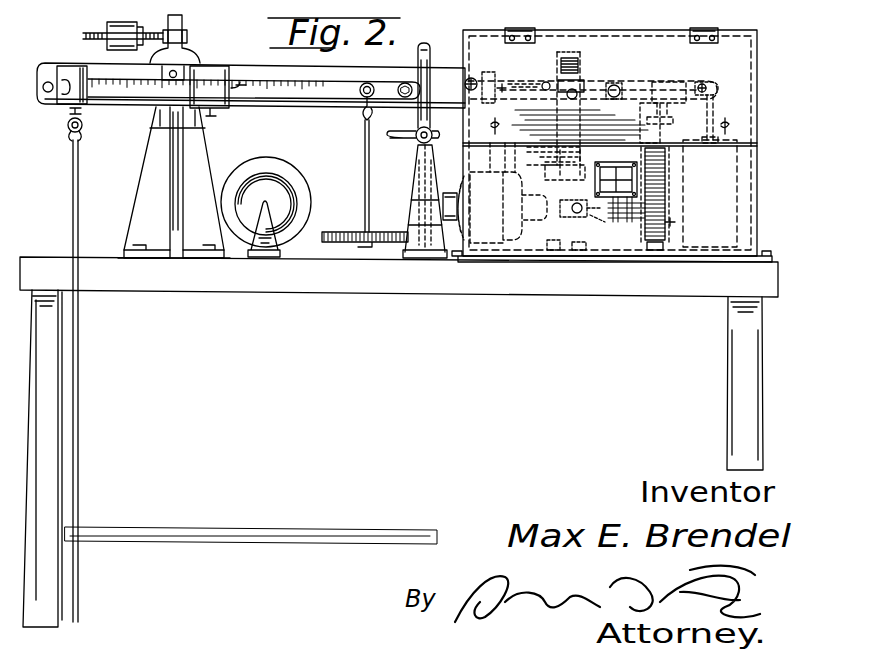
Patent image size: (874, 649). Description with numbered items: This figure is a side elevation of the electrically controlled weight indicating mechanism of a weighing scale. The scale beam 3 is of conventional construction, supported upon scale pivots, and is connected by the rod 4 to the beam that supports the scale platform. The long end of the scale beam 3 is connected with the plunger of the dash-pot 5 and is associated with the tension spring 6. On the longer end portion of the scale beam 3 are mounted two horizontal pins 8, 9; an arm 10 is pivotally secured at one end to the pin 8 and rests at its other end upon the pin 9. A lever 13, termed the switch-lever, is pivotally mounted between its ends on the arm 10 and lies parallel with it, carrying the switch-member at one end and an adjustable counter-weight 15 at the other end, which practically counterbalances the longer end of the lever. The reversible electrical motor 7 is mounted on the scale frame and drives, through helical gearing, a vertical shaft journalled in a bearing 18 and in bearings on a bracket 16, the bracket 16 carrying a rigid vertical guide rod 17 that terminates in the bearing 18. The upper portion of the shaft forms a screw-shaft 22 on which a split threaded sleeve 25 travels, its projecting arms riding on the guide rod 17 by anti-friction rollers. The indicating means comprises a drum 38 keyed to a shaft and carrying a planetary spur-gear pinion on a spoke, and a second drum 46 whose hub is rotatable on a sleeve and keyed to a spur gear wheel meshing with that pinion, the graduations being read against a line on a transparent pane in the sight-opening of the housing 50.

The scale beam 3 is at (300, 110).
The rod 4 is at (78, 443).
The dash-pot 5 is at (738, 198).
The tension spring 6 is at (645, 212).
The electrical motor 7 is at (463, 175).
The horizontal pin 8 is at (471, 78).
The horizontal pin 9 is at (612, 101).
The arm 10 is at (661, 82).
The lever 13 is at (613, 84).
The adjustable counter-weight 15 is at (697, 84).
The bracket 16 is at (545, 245).
The vertical guide rod 17 is at (545, 150).
The bearing 18 is at (574, 99).
The screw-shaft 22 is at (557, 72).
The threaded sleeve 25 is at (580, 99).
The drum 38 is at (650, 212).
The second drum 46 is at (607, 223).
The housing 50 is at (737, 193).